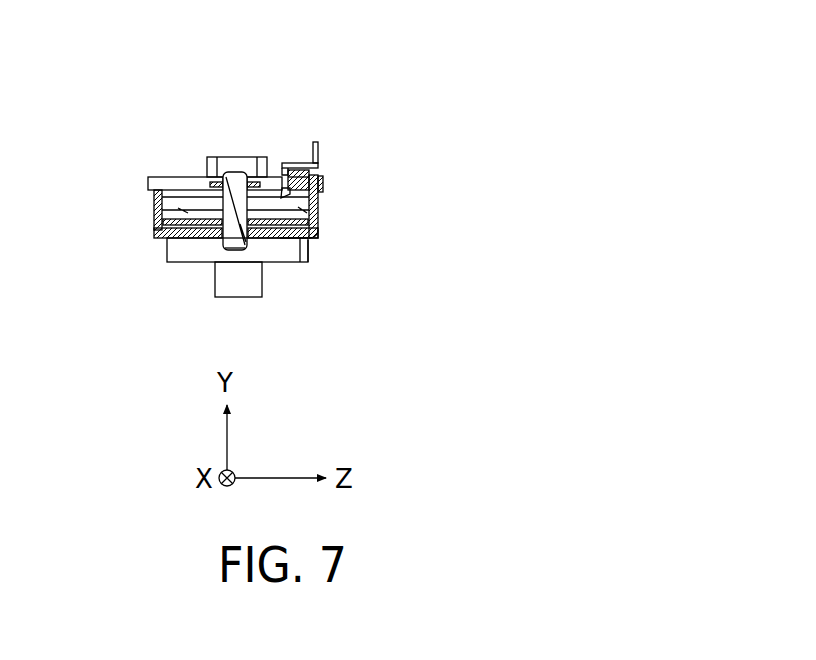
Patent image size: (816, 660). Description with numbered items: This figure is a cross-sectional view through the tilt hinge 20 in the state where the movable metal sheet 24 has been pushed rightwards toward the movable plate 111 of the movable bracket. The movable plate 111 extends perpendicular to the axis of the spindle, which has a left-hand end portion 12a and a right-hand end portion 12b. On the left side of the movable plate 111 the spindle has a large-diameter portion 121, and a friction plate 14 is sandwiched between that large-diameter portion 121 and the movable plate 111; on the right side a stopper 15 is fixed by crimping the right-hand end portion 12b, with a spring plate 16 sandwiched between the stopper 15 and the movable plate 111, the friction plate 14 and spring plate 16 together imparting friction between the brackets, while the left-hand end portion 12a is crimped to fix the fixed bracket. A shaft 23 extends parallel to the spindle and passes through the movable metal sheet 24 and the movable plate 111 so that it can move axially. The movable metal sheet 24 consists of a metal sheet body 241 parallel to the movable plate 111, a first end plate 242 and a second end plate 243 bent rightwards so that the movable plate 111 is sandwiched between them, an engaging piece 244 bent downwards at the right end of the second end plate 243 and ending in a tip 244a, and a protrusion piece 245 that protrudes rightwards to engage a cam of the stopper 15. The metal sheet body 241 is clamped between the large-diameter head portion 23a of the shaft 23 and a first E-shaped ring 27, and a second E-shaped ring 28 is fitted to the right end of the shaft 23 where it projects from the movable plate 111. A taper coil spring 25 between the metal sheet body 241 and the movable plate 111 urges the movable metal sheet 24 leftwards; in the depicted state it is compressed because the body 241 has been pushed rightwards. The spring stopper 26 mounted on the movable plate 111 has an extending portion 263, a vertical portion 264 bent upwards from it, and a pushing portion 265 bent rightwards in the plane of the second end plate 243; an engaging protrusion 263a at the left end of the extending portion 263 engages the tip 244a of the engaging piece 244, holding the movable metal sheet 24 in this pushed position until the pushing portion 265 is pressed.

The tilt hinge 20 is at (453, 90).
The left-hand end portion 12a is at (263, 289).
The right-hand end portion 12b is at (206, 173).
The friction plate 14 is at (317, 234).
The stopper 15 is at (185, 177).
The spring plate 16 is at (318, 198).
The shaft 23 is at (222, 199).
The large-diameter portion 23a is at (213, 247).
The movable metal sheet 24 is at (155, 236).
The taper coil spring 25 is at (153, 217).
The spring stopper 26 is at (318, 146).
The first E-shaped ring 27 is at (167, 242).
The second E-shaped ring 28 is at (215, 182).
The movable plate 111 is at (321, 221).
The large-diameter portion 121 is at (308, 244).
The metal sheet body 241 is at (282, 243).
The first end plate 242 is at (152, 199).
The second end plate 243 is at (321, 213).
The engaging piece 244 is at (318, 165).
The tip 244a is at (294, 170).
The protrusion piece 245 is at (323, 172).
The extending portion 263 is at (282, 164).
The engaging protrusion 263a is at (320, 204).
The vertical portion 264 is at (300, 165).
The pushing portion 265 is at (318, 155).